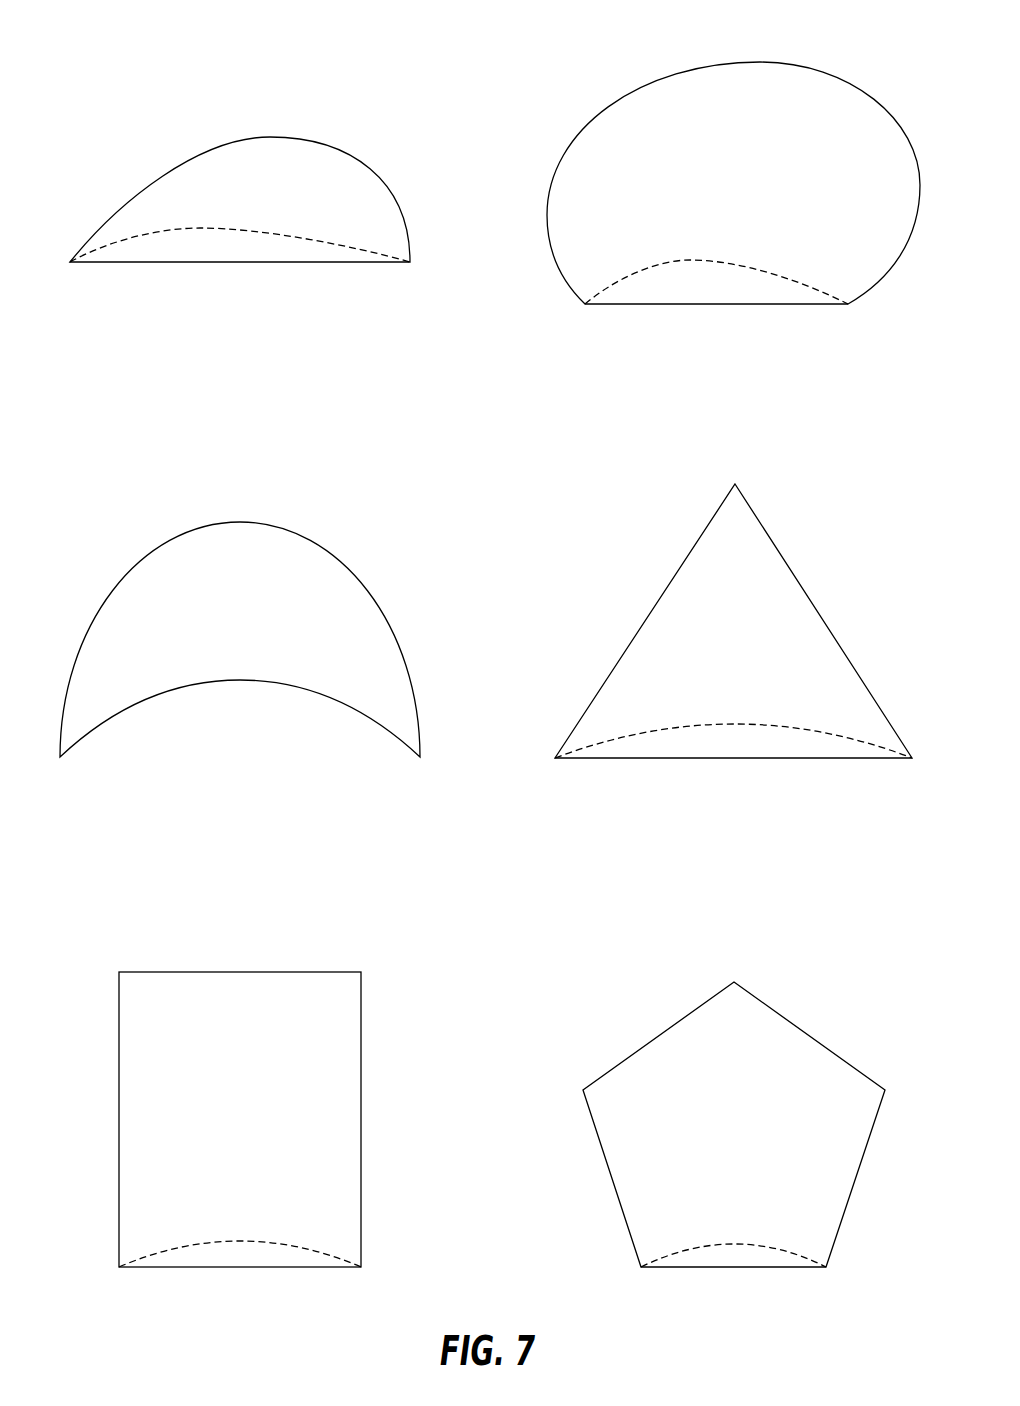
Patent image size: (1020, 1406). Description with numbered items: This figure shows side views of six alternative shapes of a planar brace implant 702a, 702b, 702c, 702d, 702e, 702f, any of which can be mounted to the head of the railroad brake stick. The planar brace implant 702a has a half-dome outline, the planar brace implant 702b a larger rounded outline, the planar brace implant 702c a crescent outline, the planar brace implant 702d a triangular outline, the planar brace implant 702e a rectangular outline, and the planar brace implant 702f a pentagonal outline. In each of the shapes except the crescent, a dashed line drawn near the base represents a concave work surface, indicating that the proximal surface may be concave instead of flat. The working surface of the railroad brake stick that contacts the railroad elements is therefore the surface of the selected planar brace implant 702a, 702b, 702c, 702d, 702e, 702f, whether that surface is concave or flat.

The planar brace implant 702a is at (322, 59).
The planar brace implant 702b is at (854, 59).
The planar brace implant 702c is at (323, 488).
The planar brace implant 702d is at (855, 488).
The planar brace implant 702e is at (323, 938).
The planar brace implant 702f is at (855, 938).